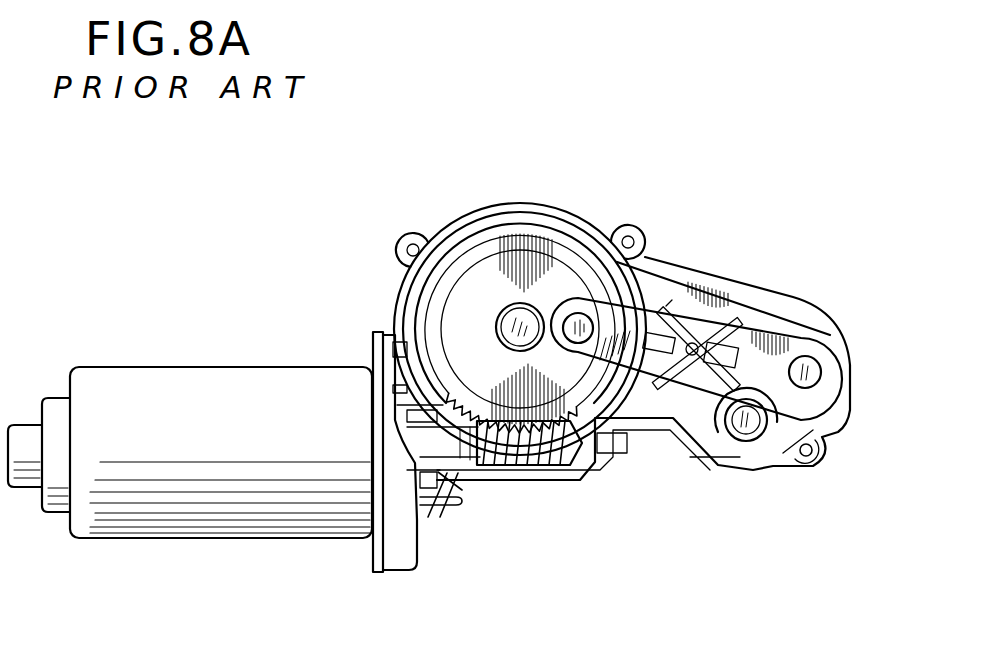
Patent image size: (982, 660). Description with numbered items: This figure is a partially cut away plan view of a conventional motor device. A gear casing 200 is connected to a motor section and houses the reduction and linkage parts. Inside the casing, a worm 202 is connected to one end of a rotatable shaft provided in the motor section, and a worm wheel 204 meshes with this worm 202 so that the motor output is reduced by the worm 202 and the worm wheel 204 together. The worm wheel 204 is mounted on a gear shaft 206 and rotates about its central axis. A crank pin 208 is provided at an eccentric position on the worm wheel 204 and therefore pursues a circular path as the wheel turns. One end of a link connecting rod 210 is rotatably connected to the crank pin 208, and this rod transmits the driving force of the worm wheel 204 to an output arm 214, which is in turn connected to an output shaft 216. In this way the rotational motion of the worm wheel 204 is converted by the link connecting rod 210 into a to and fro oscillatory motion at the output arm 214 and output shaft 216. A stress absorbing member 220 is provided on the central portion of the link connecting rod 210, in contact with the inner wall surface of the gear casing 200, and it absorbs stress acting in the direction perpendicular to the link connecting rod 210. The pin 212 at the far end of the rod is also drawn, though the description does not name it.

The gear casing 200 is at (723, 280).
The worm 202 is at (523, 462).
The worm wheel 204 is at (563, 458).
The gear shaft 206 is at (518, 302).
The crank pin 208 is at (577, 313).
The link connecting rod 210 is at (777, 332).
The pivot pin 212 is at (812, 358).
The output arm 214 is at (820, 434).
The output shaft 216 is at (750, 424).
The stress absorbing member 220 is at (668, 305).